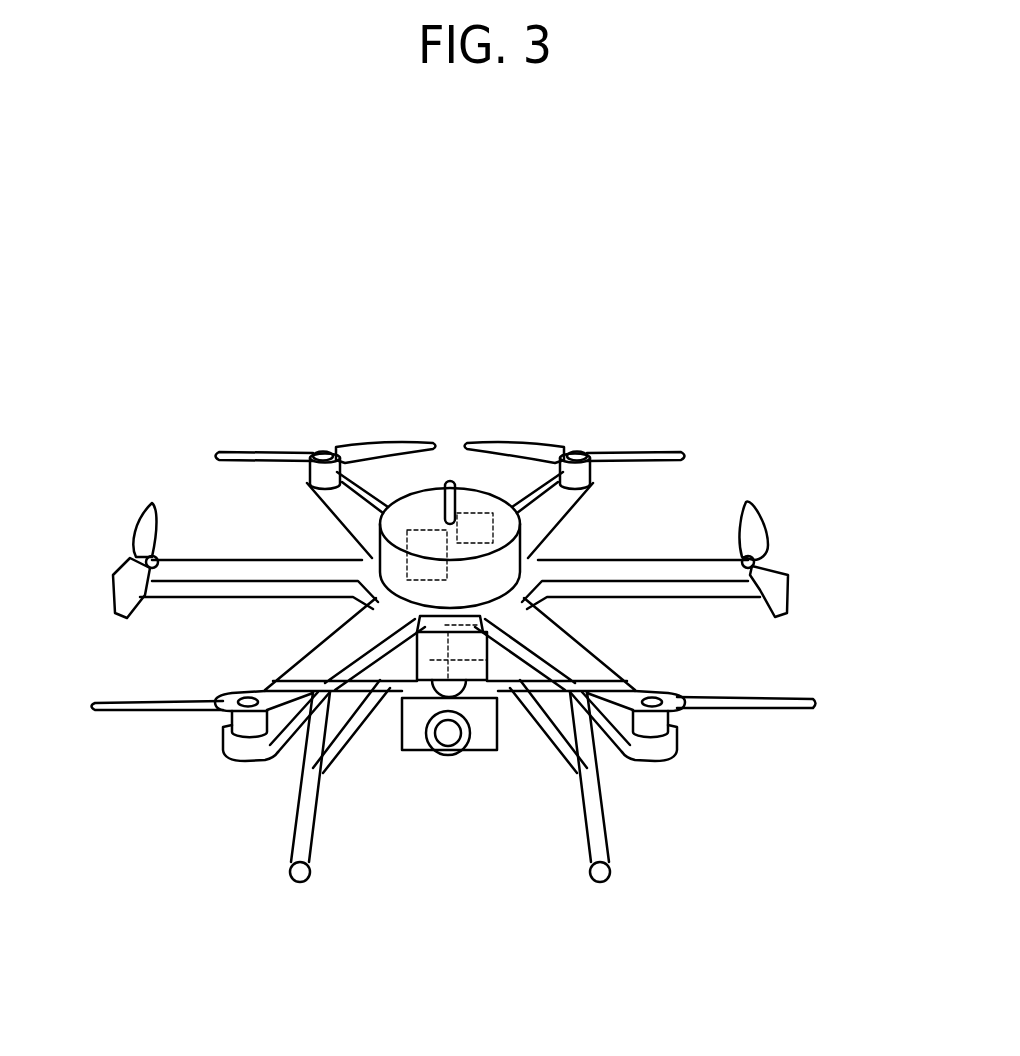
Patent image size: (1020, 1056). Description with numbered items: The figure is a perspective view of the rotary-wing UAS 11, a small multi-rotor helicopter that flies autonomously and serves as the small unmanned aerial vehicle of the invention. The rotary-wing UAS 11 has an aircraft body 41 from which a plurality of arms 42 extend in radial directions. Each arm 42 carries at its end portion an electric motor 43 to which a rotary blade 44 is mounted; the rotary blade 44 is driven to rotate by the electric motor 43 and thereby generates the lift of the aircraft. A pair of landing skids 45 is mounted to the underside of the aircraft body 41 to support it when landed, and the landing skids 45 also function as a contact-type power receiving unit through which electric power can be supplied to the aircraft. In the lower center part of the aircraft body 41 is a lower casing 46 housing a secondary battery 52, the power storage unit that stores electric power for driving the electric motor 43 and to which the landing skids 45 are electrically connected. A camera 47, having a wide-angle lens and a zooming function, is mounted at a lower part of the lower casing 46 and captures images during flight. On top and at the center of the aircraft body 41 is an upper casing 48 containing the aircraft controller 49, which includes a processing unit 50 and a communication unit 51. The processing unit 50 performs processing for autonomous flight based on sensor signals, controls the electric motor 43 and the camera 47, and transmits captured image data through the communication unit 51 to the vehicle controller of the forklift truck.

The rotary-wing UAS 11 is at (607, 328).
The aircraft body 41 is at (360, 552).
The arm 42 is at (598, 493).
The electric motor 43 is at (592, 456).
The rotary blade 44 is at (627, 452).
The landing skid 45 is at (293, 810).
The lower casing 46 is at (400, 655).
The camera 47 is at (458, 760).
The upper casing 48 is at (405, 528).
The aircraft controller 49 is at (538, 370).
The processing unit 50 is at (427, 530).
The communication unit 51 is at (490, 513).
The secondary battery 52 is at (483, 672).